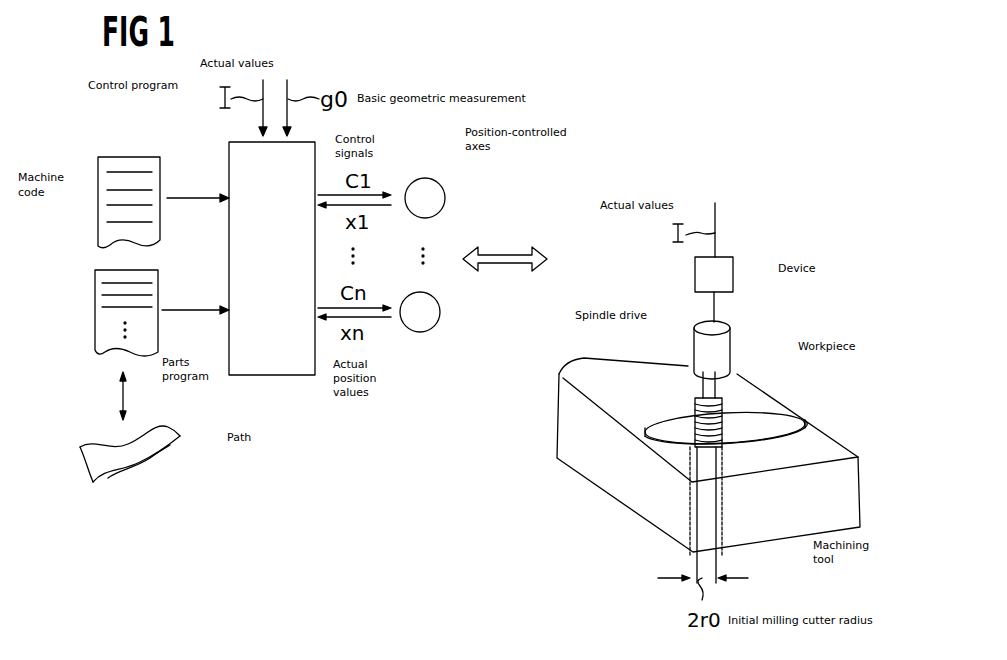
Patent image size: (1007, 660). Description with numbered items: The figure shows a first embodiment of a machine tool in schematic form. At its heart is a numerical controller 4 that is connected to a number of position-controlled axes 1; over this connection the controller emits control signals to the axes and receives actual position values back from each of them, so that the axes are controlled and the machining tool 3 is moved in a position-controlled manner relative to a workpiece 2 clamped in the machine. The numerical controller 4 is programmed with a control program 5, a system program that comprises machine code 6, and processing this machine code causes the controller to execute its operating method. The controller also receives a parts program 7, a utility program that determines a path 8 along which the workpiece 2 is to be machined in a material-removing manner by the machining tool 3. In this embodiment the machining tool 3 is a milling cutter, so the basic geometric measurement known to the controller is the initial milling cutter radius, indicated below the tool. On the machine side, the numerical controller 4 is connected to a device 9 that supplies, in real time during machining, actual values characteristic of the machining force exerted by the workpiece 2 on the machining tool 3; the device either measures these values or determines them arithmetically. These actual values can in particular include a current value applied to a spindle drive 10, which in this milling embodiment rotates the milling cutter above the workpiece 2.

The position-controlled axes 1 is at (434, 181).
The workpiece 2 is at (760, 395).
The machining tool 3 is at (722, 427).
The numerical controller 4 is at (229, 260).
The control program 5 is at (132, 157).
The machine code 6 is at (152, 172).
The parts program 7 is at (158, 337).
The path 8 is at (178, 434).
The device 9 is at (733, 272).
The spindle drive 10 is at (694, 345).